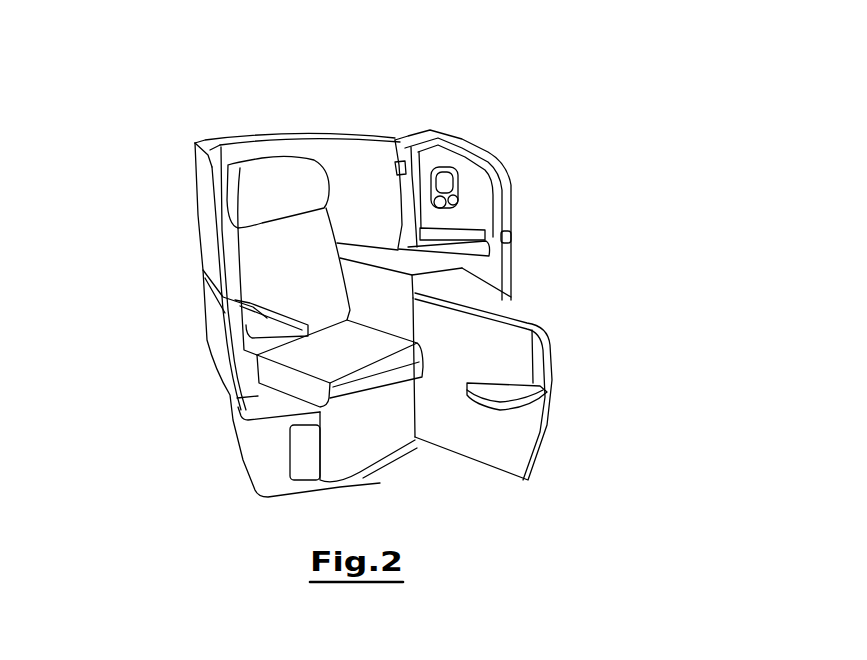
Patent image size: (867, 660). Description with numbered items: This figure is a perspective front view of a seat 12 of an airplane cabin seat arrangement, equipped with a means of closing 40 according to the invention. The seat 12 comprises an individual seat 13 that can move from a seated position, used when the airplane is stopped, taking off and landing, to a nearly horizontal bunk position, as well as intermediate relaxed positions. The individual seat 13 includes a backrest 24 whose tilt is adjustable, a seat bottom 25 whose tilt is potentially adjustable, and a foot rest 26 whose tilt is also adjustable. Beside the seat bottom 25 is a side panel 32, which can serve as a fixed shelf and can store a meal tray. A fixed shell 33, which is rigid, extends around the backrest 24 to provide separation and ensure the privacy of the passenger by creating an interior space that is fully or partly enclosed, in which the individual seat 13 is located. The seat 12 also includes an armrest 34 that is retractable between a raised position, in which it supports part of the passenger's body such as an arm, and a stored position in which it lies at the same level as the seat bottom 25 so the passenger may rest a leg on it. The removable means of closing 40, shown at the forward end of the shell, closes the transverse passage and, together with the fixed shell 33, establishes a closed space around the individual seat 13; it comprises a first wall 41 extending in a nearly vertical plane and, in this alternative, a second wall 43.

The seat 12 is at (203, 98).
The individual seat 13 is at (275, 164).
The backrest 24 is at (300, 243).
The fixed shell 33 is at (363, 177).
The means of closing 40 is at (534, 187).
The second wall 43 is at (500, 170).
The first wall 41 is at (483, 203).
The side panel 32 is at (542, 310).
The armrest 34 is at (203, 270).
The seat bottom 25 is at (313, 355).
The foot rest 26 is at (378, 428).